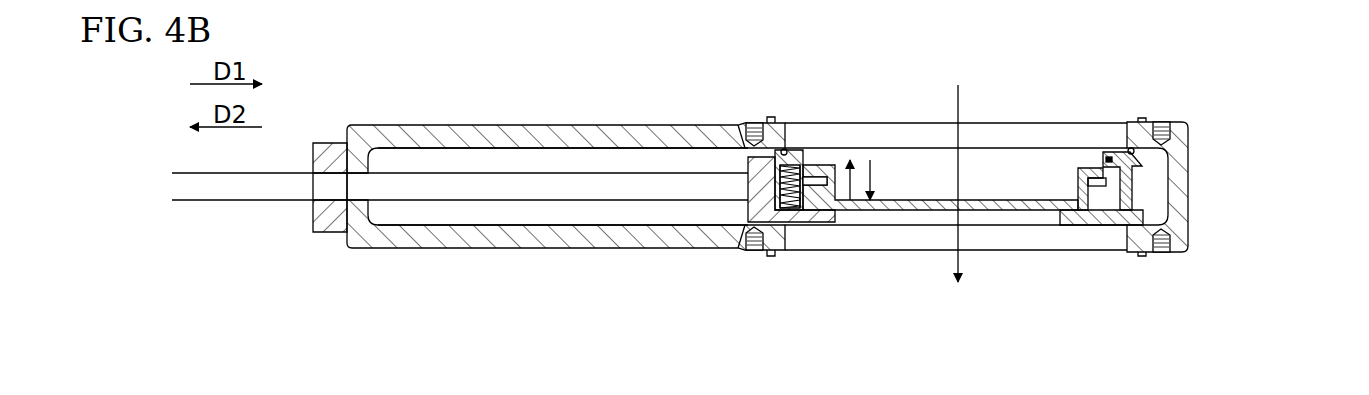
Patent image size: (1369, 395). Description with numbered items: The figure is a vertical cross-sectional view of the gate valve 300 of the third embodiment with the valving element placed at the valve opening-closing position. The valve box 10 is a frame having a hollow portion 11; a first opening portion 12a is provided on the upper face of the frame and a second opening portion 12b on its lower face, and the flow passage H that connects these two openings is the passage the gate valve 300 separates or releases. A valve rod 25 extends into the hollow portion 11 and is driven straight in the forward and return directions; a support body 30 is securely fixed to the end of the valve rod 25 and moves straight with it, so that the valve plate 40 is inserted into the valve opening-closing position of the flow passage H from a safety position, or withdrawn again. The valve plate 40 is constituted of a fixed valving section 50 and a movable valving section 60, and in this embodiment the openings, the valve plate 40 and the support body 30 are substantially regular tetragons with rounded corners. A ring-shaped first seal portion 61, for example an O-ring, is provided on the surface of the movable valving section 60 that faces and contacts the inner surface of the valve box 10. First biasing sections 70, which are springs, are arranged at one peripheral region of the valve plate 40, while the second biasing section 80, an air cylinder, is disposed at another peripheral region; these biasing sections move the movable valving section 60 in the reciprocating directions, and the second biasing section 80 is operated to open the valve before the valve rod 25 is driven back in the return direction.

The valve box 10 is at (686, 135).
The hollow portion 11 is at (497, 160).
The first opening portion 12a is at (906, 133).
The second opening portion 12b is at (905, 237).
The valve rod 25 is at (565, 183).
The support body 30 is at (755, 210).
The valve plate 40 is at (1145, 72).
The fixed valving section 50 is at (1088, 168).
The movable valving section 60 is at (1120, 152).
The first seal portion 61 is at (785, 150).
The first biasing section 70 is at (782, 212).
The second biasing section 80 is at (817, 186).
The gate valve 300 is at (1204, 117).